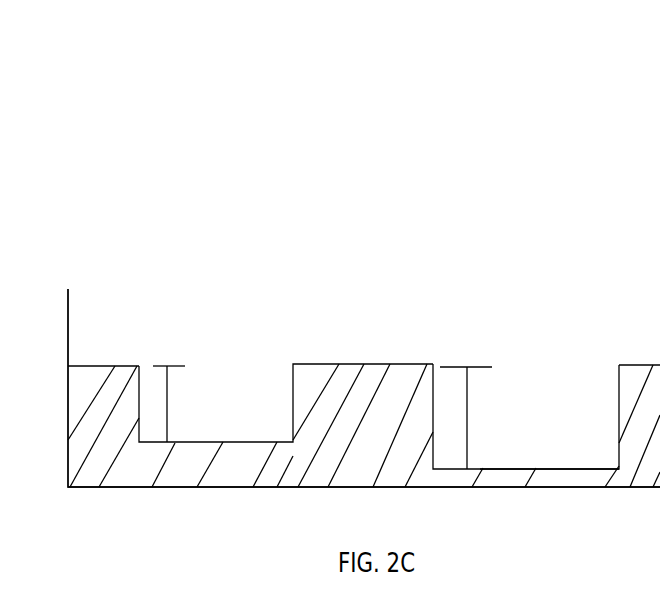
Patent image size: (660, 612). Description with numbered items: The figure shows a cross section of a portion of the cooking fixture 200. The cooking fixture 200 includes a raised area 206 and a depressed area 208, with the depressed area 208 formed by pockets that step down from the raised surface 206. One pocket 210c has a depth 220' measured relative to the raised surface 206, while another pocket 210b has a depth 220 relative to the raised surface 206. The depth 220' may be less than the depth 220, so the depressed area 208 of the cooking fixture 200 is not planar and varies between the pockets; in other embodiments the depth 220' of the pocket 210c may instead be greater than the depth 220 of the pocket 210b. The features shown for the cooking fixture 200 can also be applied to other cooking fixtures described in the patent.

The cooking fixture 200 is at (133, 92).
The raised area 206 is at (645, 357).
The depressed area 208 is at (557, 455).
The pocket 210b is at (603, 415).
The pocket 210c is at (262, 388).
The depth 220 is at (471, 375).
The depth 220' is at (185, 332).